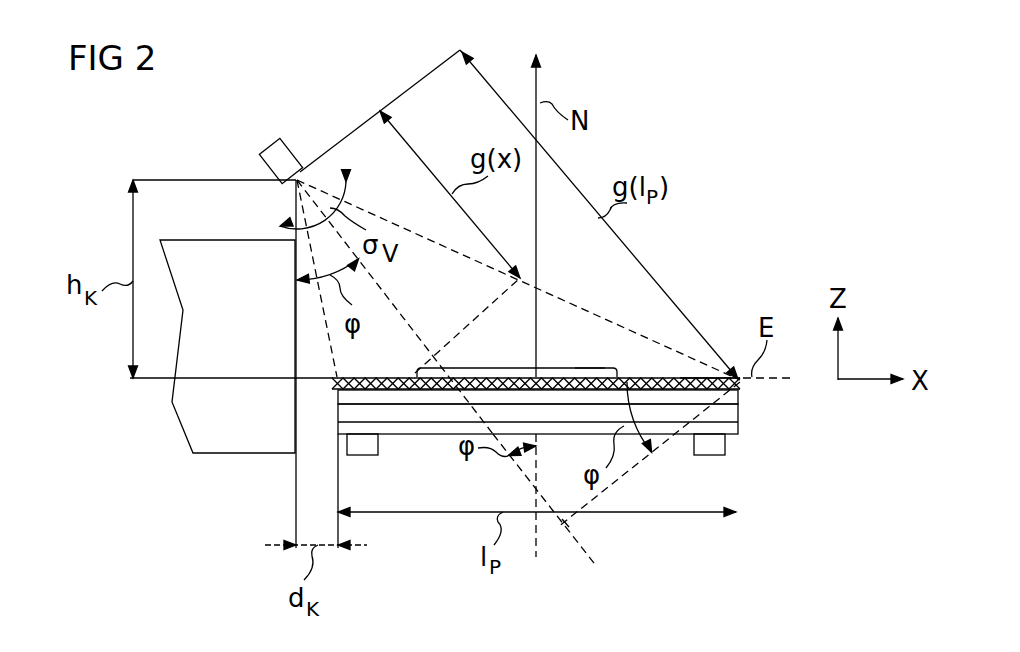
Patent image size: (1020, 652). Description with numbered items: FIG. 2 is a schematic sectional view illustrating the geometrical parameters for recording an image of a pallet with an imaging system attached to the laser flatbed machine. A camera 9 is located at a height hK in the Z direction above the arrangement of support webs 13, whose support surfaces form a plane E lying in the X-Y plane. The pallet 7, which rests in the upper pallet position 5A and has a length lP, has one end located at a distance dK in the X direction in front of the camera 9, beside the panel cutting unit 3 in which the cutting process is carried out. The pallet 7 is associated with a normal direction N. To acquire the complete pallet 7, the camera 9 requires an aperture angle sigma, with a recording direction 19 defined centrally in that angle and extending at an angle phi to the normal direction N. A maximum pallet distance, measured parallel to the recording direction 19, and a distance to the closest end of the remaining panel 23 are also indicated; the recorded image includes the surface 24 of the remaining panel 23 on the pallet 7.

The camera 9 is at (284, 150).
The panel cutting unit 3 is at (208, 453).
The pallet 7 is at (742, 388).
The upper pallet position 5A is at (740, 399).
The surface of the remaining panel 24 is at (510, 368).
The remaining panel 23 is at (589, 367).
The support webs 13 is at (688, 380).
The recording direction 19 is at (587, 552).